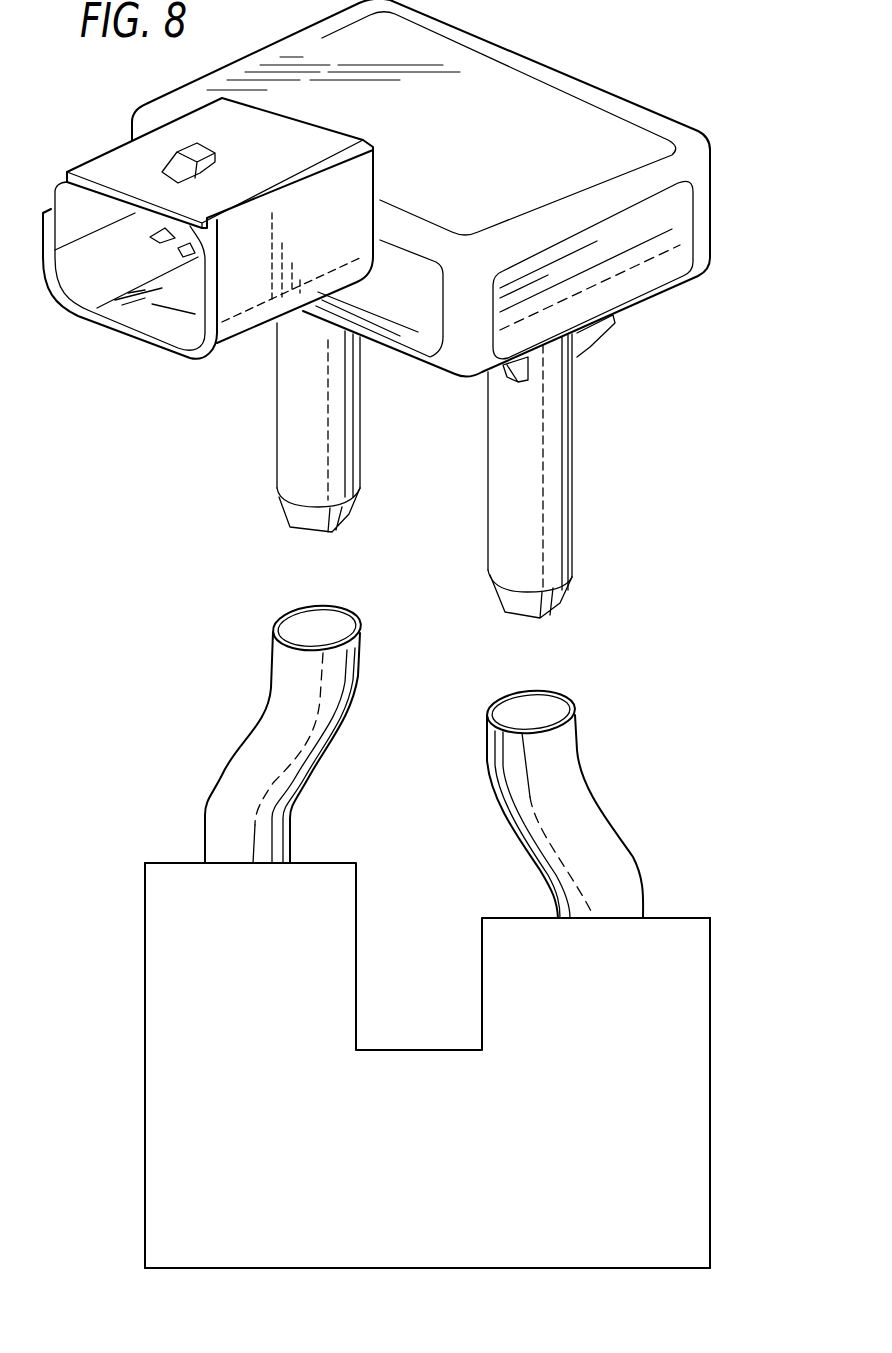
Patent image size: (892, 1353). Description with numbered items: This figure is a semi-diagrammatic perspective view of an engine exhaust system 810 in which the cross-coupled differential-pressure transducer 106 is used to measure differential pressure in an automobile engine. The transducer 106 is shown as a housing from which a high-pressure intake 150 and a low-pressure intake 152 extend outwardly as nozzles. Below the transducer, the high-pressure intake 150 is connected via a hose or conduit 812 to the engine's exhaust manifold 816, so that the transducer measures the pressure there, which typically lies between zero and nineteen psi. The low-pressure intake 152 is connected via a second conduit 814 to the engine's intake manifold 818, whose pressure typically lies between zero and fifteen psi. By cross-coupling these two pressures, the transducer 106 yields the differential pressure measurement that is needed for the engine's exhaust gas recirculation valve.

The cross-coupled differential-pressure transducer 106 is at (686, 378).
The high-pressure intake 150 is at (567, 553).
The low-pressure intake 152 is at (283, 474).
The exhaust system 810 is at (442, 1128).
The hose or conduit 812 is at (582, 807).
The conduit 814 is at (268, 725).
The exhaust manifold 816 is at (703, 1016).
The intake manifold 818 is at (158, 993).